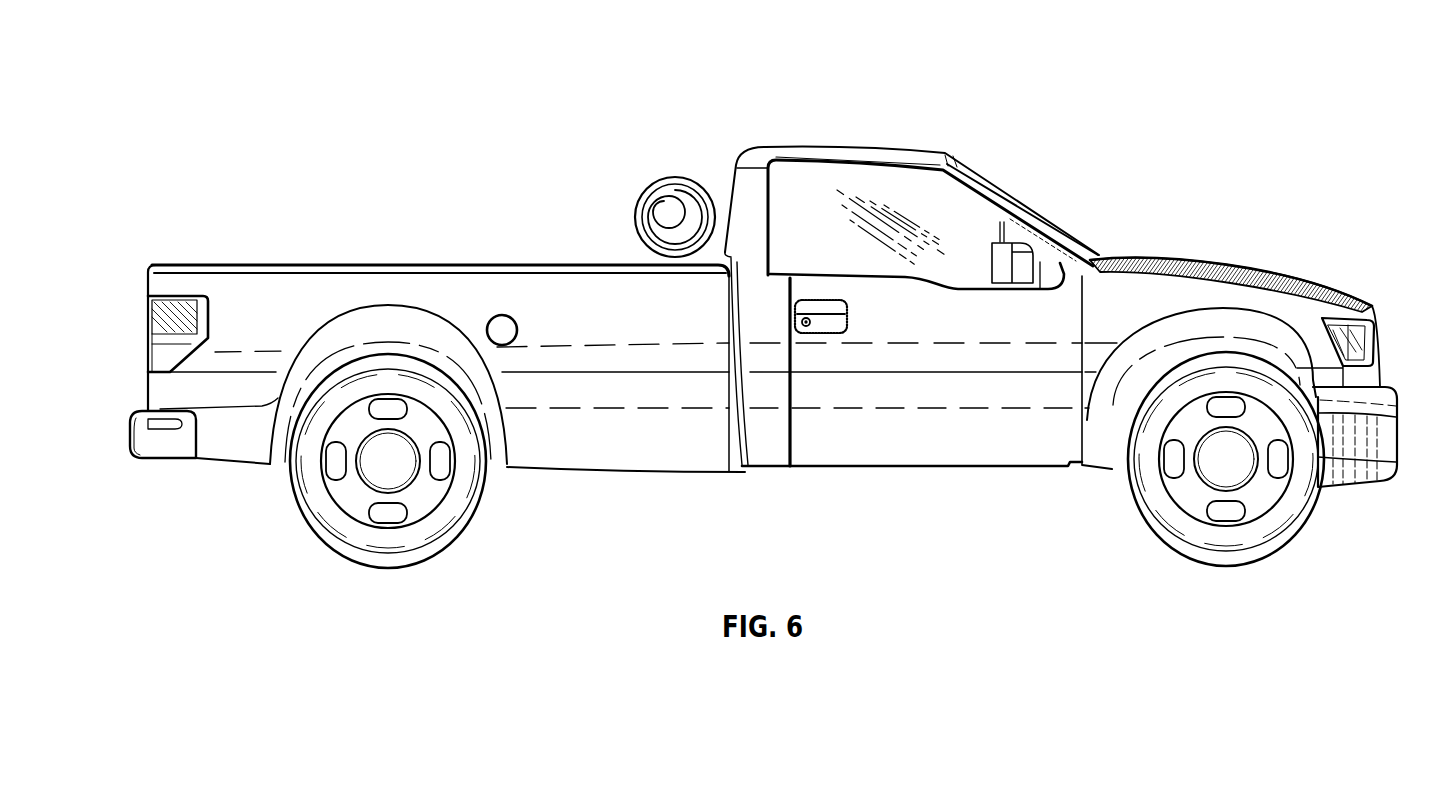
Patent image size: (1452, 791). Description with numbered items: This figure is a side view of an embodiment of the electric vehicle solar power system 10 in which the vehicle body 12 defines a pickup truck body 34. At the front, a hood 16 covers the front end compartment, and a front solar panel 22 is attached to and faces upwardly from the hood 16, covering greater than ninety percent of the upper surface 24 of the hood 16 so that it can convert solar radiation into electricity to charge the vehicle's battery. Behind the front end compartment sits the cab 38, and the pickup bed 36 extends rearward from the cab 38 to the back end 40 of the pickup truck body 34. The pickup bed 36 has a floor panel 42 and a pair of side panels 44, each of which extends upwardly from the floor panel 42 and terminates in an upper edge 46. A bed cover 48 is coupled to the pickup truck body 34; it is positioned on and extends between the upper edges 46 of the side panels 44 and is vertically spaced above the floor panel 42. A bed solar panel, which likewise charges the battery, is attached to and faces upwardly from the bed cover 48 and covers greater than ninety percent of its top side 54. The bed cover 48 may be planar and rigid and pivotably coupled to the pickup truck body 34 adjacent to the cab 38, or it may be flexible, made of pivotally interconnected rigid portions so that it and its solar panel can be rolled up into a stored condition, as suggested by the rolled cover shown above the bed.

The electric vehicle solar power system 10 is at (1283, 94).
The vehicle body 12 is at (838, 149).
The hood 16 is at (1367, 311).
The front solar panel 22 is at (1192, 259).
The upper surface 24 is at (1360, 320).
The pickup truck body 34 is at (1032, 449).
The pickup bed 36 is at (220, 282).
The cab 38 is at (945, 449).
The back end 40 is at (150, 322).
The floor panel 42 is at (548, 474).
The side panels 44 is at (237, 440).
The upper edge 46 is at (277, 263).
The bed cover 48 is at (677, 177).
The top side 54 is at (482, 260).